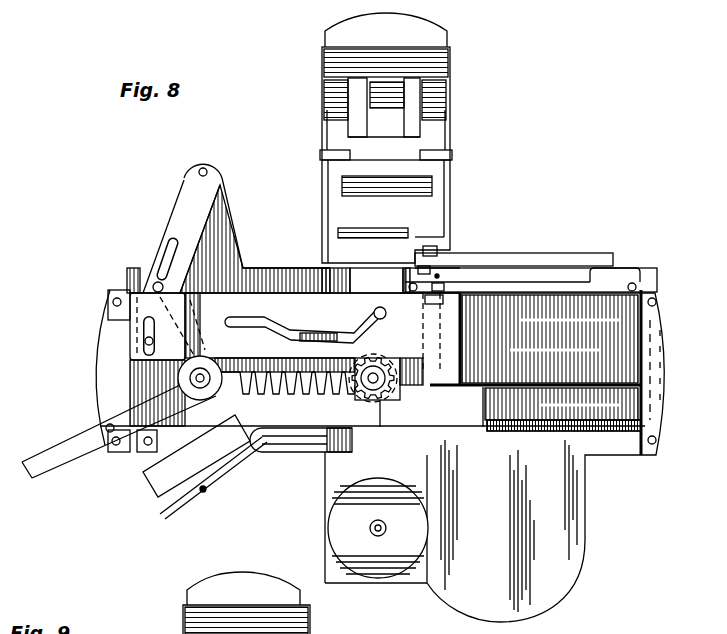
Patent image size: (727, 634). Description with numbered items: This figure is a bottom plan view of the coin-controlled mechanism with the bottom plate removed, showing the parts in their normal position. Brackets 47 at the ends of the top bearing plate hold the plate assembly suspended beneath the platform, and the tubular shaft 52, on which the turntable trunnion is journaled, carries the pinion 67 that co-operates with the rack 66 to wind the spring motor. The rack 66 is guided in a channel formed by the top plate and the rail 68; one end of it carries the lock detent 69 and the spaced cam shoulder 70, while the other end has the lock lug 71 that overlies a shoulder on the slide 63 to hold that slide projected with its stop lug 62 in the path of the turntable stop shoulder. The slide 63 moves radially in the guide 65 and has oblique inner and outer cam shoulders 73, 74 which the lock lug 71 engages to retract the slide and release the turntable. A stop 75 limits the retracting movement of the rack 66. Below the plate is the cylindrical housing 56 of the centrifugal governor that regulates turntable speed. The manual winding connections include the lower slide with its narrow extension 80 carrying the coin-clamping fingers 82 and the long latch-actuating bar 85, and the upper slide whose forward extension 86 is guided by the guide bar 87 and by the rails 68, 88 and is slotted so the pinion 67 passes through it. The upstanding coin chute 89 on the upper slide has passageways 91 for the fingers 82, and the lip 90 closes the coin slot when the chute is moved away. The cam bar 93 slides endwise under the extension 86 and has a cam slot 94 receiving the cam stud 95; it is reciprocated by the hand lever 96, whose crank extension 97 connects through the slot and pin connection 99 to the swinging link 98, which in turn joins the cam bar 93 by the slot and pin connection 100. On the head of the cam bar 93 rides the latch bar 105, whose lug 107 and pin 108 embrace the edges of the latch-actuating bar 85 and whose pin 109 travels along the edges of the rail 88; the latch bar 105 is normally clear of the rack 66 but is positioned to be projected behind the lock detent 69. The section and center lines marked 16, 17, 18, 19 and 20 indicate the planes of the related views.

In FIG. 8, the center axis 16 is at (447, 33).
In FIG. 8, the section line 17- 17 is at (137, 309).
In FIG. 8, the section line 18- 18 is at (107, 410).
In FIG. 8, the section line 19- 19 is at (373, 356).
In FIG. 8, the section line 20- 20 is at (337, 528).
In FIG. 8, the brackets 47 is at (655, 372).
In FIG. 8, the tubular shaft 52 is at (430, 364).
In FIG. 8, the cylindrical housing 56 is at (405, 503).
In FIG. 8, the stop lug 62 is at (180, 500).
In FIG. 8, the slide 63 is at (210, 482).
In FIG. 8, the guide 65 is at (204, 492).
In FIG. 8, the rack 66 is at (302, 430).
In FIG. 8, the pinion 67 is at (393, 423).
In FIG. 8, the rail 68 is at (550, 380).
In FIG. 8, the lock detent 69 is at (447, 404).
In FIG. 8, the cam shoulder 70 is at (411, 404).
In FIG. 8, the lock lug 71 is at (196, 460).
In FIG. 8, the inner cam shoulder 73 is at (246, 452).
In FIG. 8, the outer cam shoulder 74 is at (316, 432).
In FIG. 8, the stop 75 is at (142, 455).
In FIG. 8, the extension 80 is at (400, 147).
In FIG. 8, the coin-clamping fingers 82 is at (412, 114).
In FIG. 8, the latch-actuating bar 85 is at (534, 256).
In FIG. 8, the forward extension 86 is at (366, 281).
In FIG. 8, the guide bar 87 is at (330, 369).
In FIG. 8, the guide rail 88 is at (566, 284).
In FIG. 8, the coin chute 89 is at (437, 72).
In FIG. 9, the coin chute 89 is at (300, 612).
In FIG. 8, the lip 90 is at (447, 47).
In FIG. 9, the lip 90 is at (300, 591).
In FIG. 8, the passageways 91 is at (420, 96).
In FIG. 8, the cam bar 93 is at (436, 333).
In FIG. 8, the cam slot 94 is at (300, 334).
In FIG. 8, the cam stud 95 is at (384, 316).
In FIG. 8, the hand lever 96 is at (60, 466).
In FIG. 8, the crank extension 97 is at (196, 336).
In FIG. 8, the swinging link 98 is at (184, 216).
In FIG. 8, the slot and pin connection 99 is at (155, 283).
In FIG. 8, the slot and pin connection 100 is at (147, 341).
In FIG. 8, the latch bar 105 is at (438, 276).
In FIG. 8, the lug 107 is at (437, 251).
In FIG. 8, the pin 108 is at (420, 270).
In FIG. 8, the pin 109 is at (444, 286).